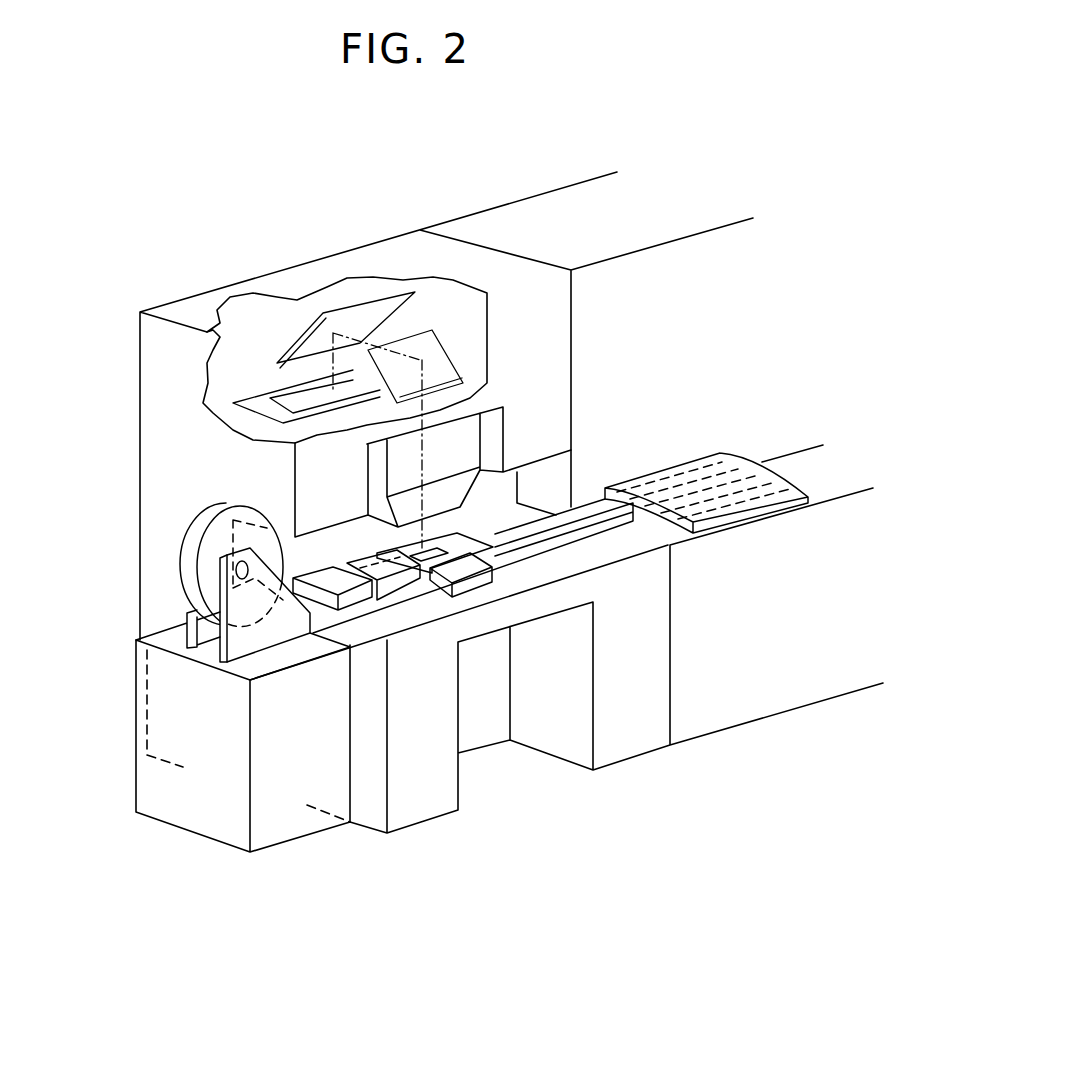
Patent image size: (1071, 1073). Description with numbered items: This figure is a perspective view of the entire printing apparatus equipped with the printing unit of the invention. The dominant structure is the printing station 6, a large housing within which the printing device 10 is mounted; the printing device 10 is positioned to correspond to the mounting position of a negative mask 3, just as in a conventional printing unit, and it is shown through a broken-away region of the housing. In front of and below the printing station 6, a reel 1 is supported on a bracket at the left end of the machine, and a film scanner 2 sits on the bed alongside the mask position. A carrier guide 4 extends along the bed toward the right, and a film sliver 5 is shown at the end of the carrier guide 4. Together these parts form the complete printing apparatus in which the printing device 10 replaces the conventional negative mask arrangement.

The reel 1 is at (203, 580).
The film scanner 2 is at (357, 600).
The negative mask 3 is at (473, 585).
The carrier guide 4 is at (585, 500).
The film sliver 5 is at (683, 466).
The printing station 6 is at (548, 401).
The printing device 10 is at (291, 331).